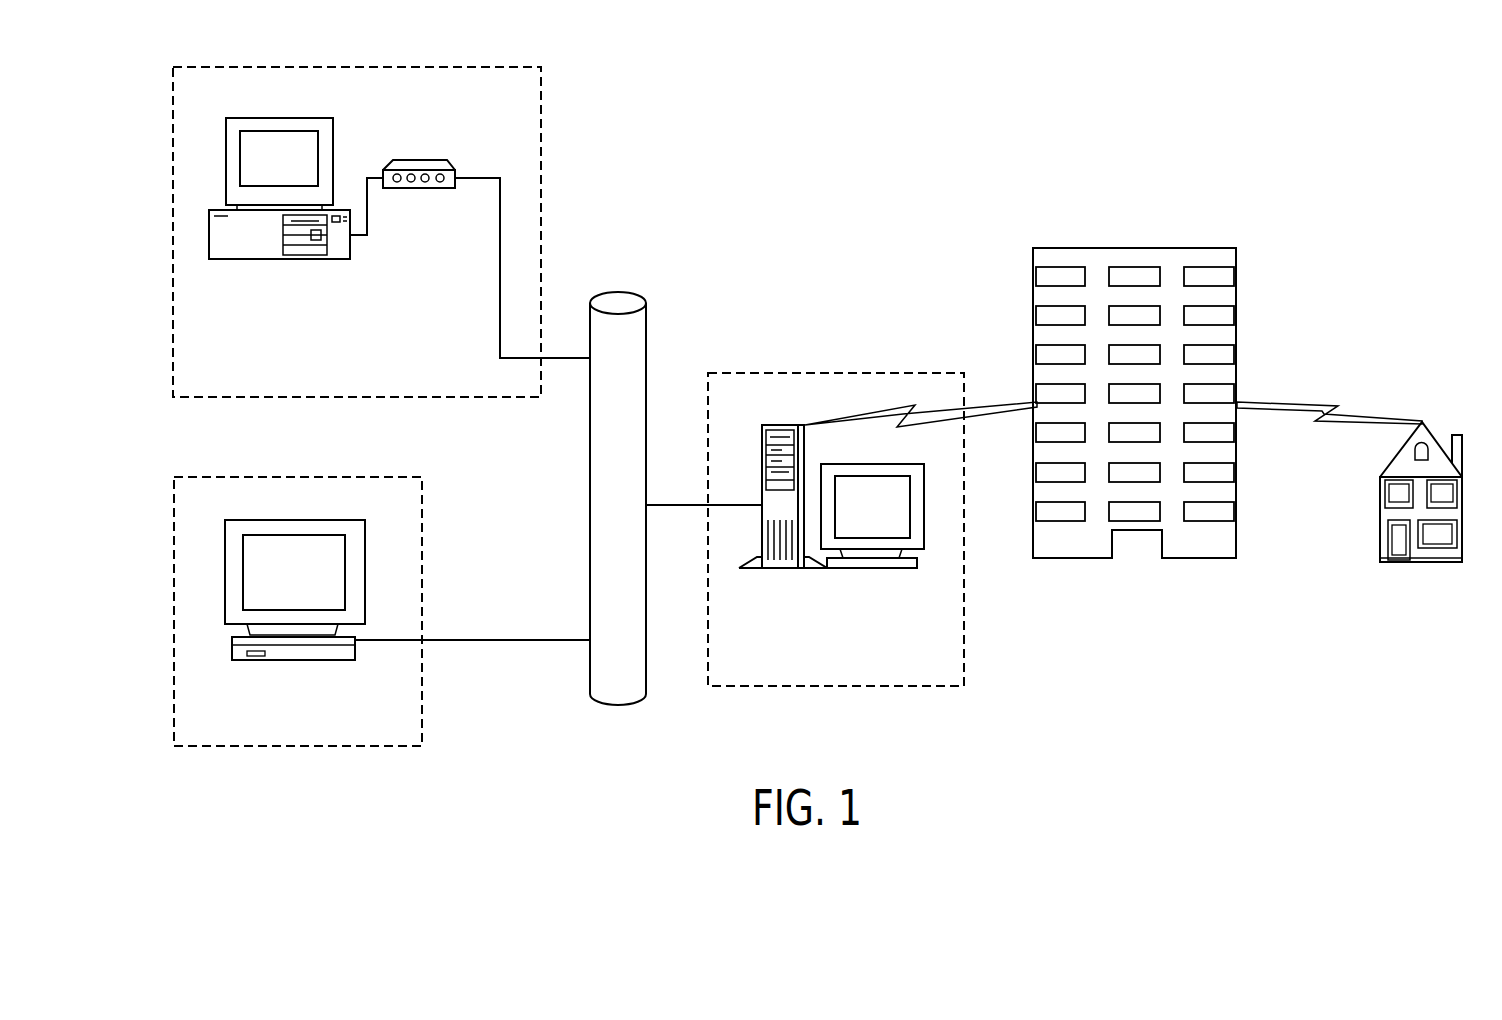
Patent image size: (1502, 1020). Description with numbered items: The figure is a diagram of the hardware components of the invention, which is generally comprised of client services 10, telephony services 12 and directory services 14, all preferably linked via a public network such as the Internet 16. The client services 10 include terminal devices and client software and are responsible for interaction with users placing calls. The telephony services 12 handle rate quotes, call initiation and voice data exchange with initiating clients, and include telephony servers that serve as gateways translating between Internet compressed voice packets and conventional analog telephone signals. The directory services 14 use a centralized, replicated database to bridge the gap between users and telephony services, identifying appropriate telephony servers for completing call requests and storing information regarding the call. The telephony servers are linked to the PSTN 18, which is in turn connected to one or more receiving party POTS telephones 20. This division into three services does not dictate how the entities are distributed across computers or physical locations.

The client services 10 is at (541, 117).
The telephony services 12 is at (762, 372).
The directory services 14 is at (422, 518).
The Internet 16 is at (615, 292).
The PSTN 18 is at (1097, 248).
The POTS telephones 20 is at (1430, 432).